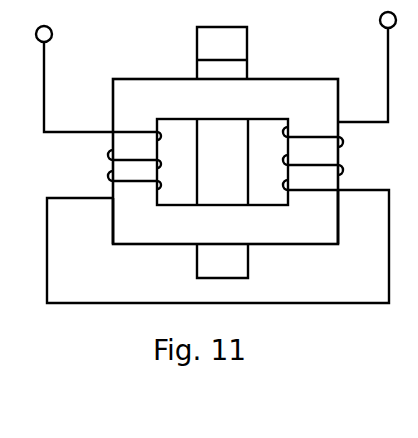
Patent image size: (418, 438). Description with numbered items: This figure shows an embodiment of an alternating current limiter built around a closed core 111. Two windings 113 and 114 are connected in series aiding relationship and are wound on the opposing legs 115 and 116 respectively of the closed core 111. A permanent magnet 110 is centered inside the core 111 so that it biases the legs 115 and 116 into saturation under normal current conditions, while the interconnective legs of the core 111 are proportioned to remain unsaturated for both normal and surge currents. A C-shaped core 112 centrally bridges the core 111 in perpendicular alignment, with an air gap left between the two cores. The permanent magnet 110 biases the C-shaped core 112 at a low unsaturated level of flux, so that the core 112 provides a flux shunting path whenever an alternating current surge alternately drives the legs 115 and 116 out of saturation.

The permanent magnet 110 is at (206, 171).
The closed core 111 is at (160, 252).
The C-shaped core 112 is at (232, 267).
The winding 113 is at (107, 177).
The winding 114 is at (344, 146).
The leg 115 is at (133, 207).
The leg 116 is at (315, 215).